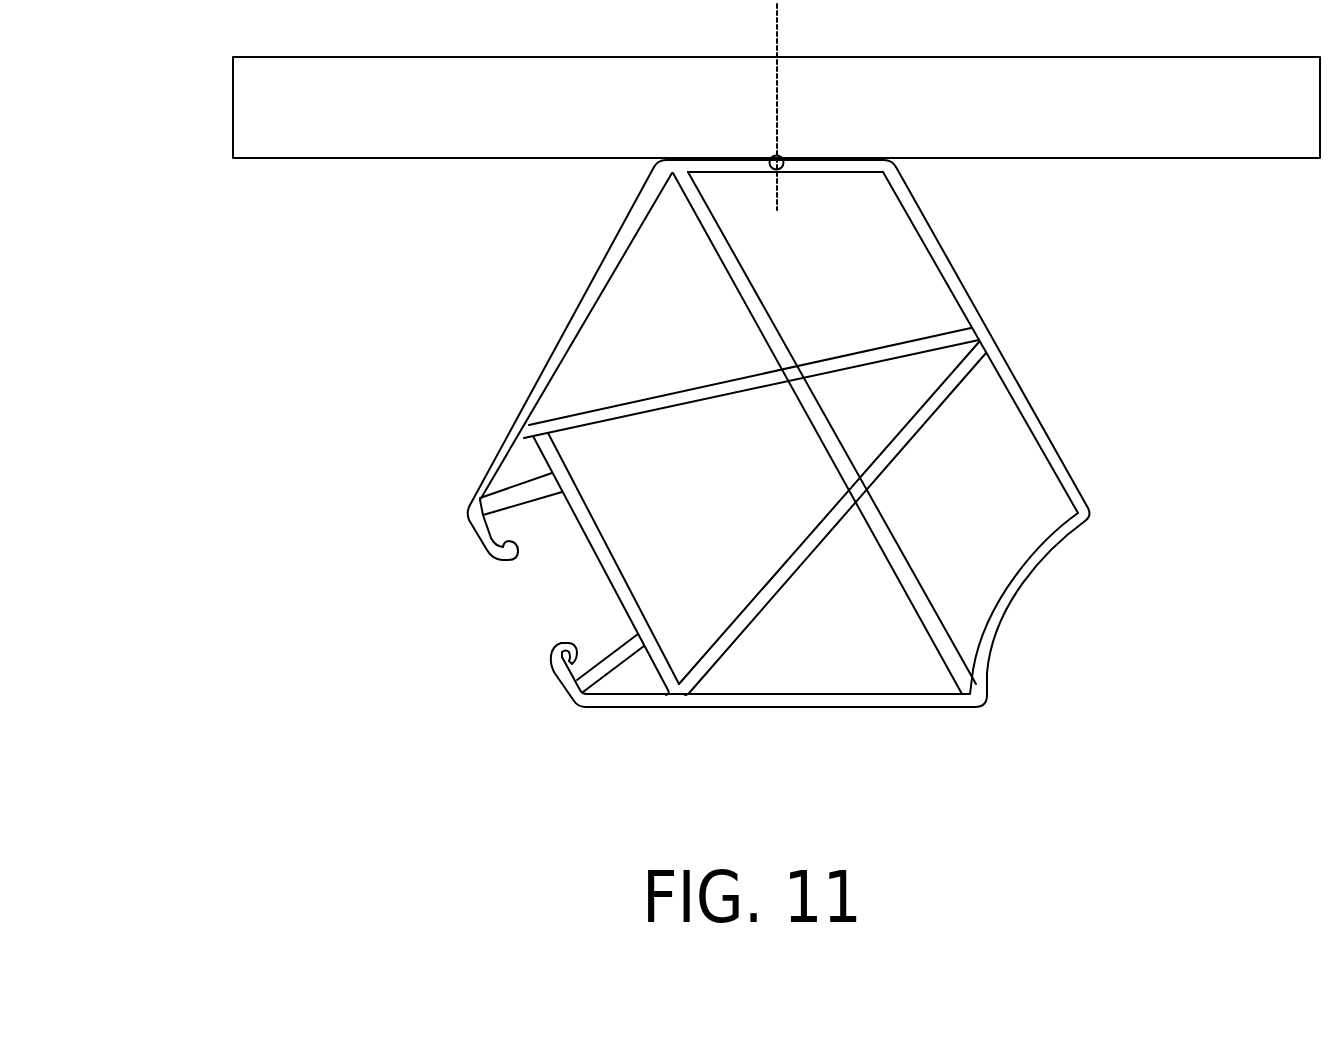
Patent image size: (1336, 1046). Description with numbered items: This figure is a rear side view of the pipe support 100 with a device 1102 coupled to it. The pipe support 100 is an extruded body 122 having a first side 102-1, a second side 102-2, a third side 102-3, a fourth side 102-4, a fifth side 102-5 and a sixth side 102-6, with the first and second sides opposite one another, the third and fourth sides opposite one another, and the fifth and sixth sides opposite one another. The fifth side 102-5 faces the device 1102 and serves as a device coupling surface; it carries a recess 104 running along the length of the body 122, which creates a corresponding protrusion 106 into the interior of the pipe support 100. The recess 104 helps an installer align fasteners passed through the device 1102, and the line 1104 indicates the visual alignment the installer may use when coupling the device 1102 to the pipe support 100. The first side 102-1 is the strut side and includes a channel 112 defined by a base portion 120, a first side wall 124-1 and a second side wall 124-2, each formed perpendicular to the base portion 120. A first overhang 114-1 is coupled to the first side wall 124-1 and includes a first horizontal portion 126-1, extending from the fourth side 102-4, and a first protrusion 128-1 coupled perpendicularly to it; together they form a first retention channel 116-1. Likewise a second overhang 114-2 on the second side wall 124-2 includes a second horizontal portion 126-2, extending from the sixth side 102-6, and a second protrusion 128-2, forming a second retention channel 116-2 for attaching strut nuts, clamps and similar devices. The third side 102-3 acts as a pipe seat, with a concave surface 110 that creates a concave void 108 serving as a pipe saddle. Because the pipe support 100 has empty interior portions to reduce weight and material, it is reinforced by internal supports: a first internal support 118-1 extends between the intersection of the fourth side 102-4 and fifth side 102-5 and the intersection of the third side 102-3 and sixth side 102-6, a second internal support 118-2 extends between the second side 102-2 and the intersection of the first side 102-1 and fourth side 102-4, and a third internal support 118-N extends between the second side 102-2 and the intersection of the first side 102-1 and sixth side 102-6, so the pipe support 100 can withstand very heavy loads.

The pipe support 100 is at (396, 283).
The first side 102-1 is at (573, 697).
The second side 102-2 is at (967, 283).
The third side 102-3 is at (988, 700).
The fourth side 102-4 is at (603, 266).
The fifth side 102-5 is at (667, 168).
The sixth side 102-6 is at (838, 712).
The recess 104 is at (795, 190).
The protrusion 106 is at (773, 174).
The concave void 108 is at (1046, 601).
The concave surface 110 is at (1022, 572).
The channel 112 is at (590, 564).
The first overhang 114-1 is at (558, 650).
The second overhang 114-2 is at (497, 556).
The first retention channel 116-1 is at (588, 675).
The second retention channel 116-2 is at (497, 519).
The first internal support 118-1 is at (897, 553).
The second internal support 118-2 is at (937, 400).
The third internal support 118-N is at (913, 347).
The base portion 120 is at (612, 565).
The body 122 is at (904, 745).
The first side wall 124-1 is at (612, 652).
The second side wall 124-2 is at (523, 500).
The first horizontal portion 126-1 is at (570, 673).
The second horizontal portion 126-2 is at (483, 547).
The first protrusion 128-1 is at (560, 648).
The second protrusion 128-2 is at (505, 557).
The device 1102 is at (262, 135).
The line 1104 is at (774, 25).